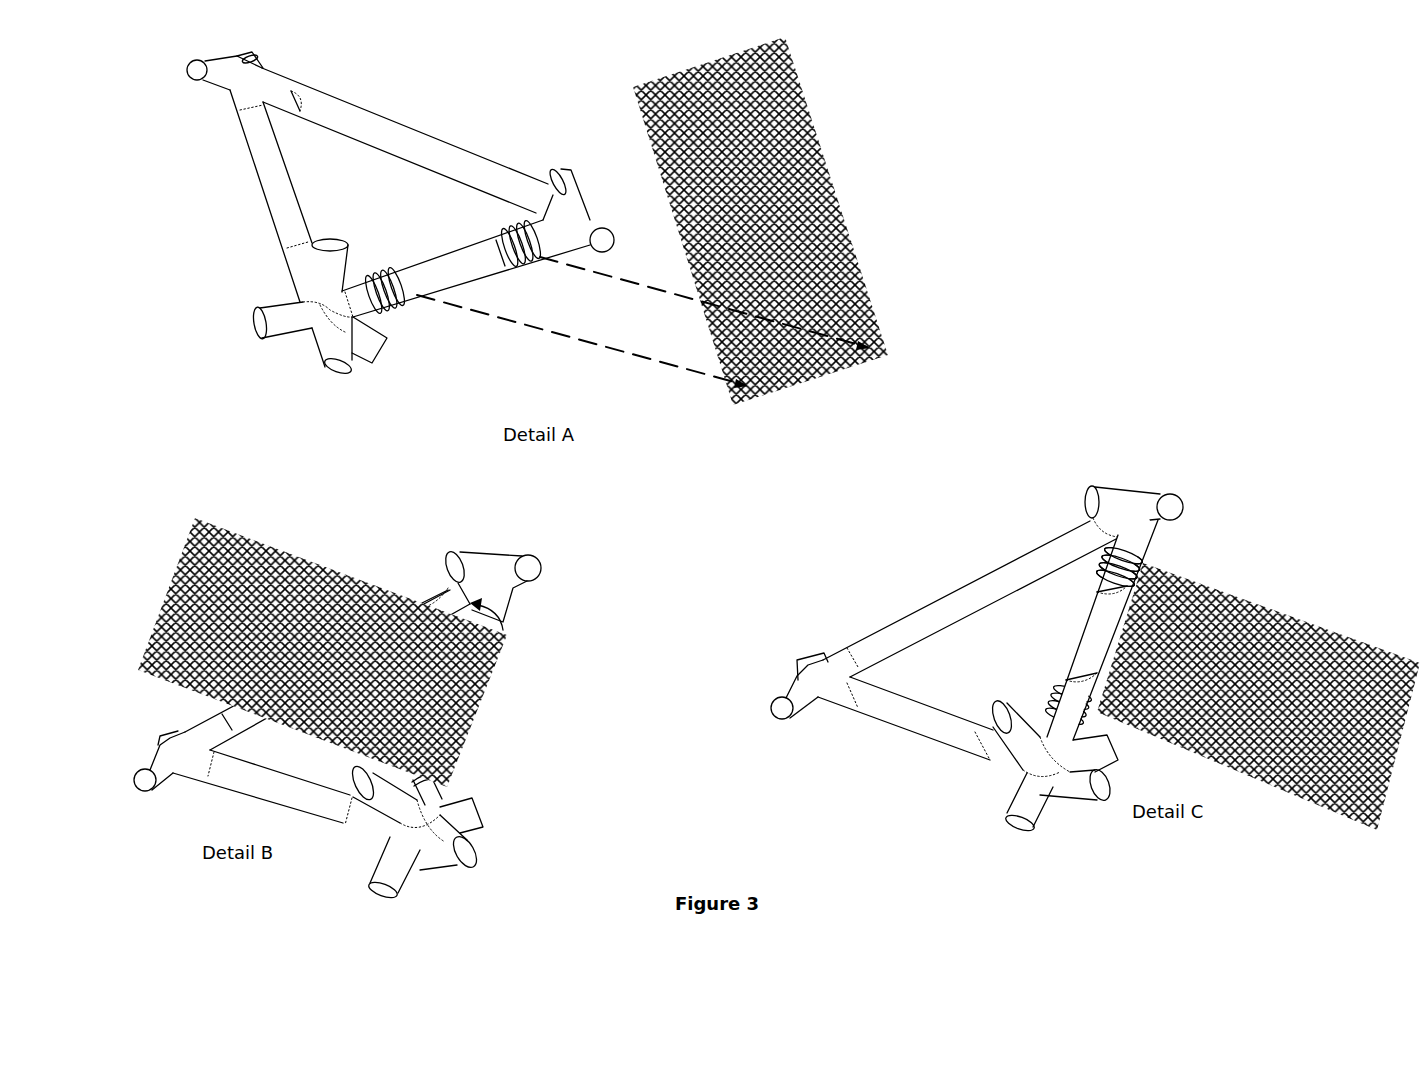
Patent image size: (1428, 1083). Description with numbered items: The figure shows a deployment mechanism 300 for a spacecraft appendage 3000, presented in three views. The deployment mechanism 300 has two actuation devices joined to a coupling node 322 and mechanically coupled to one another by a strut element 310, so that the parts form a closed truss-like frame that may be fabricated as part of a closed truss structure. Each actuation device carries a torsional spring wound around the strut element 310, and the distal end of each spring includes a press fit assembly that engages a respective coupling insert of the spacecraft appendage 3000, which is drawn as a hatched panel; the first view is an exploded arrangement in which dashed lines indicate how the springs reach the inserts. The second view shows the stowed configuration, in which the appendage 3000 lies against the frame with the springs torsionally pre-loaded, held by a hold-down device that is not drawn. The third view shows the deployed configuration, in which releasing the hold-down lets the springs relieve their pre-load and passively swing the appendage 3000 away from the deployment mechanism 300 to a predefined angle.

The deployment mechanism 300 is at (375, 97).
The coupling node 322 is at (186, 78).
The strut element 310 is at (422, 253).
The spacecraft appendage 3000 is at (803, 93).